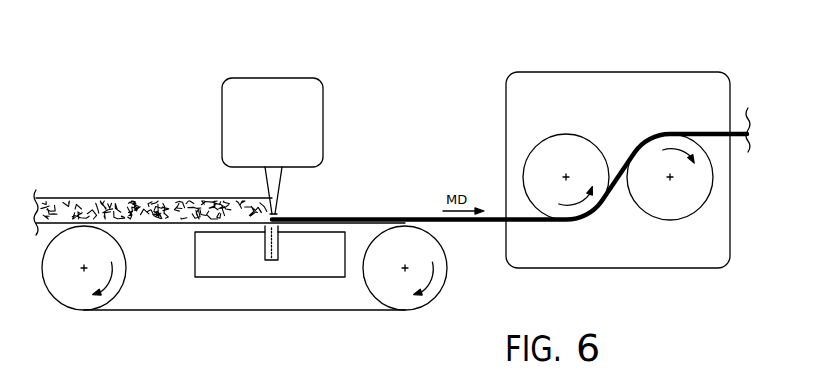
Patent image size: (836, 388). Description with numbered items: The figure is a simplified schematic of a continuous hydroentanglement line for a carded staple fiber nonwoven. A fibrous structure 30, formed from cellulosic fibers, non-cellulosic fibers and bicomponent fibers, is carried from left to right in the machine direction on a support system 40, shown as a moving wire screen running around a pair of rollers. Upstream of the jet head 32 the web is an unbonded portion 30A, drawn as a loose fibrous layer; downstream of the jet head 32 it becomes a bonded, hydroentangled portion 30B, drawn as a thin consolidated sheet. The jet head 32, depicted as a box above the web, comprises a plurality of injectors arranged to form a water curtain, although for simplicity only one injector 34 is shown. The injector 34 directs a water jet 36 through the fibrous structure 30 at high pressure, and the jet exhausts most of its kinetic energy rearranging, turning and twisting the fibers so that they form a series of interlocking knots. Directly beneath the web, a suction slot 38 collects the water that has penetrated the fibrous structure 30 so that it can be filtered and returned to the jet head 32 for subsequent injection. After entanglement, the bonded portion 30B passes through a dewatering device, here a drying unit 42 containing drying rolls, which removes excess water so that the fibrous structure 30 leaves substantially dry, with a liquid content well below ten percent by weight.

The fibrous structure 30 is at (52, 156).
The unbonded portion 30A is at (146, 196).
The bonded portion 30B is at (382, 216).
The jet head 32 is at (323, 123).
The injector 34 is at (278, 193).
The water jet 36 is at (291, 208).
The suction slot 38 is at (252, 263).
The support system 40 is at (87, 332).
The drying unit 42 is at (623, 70).